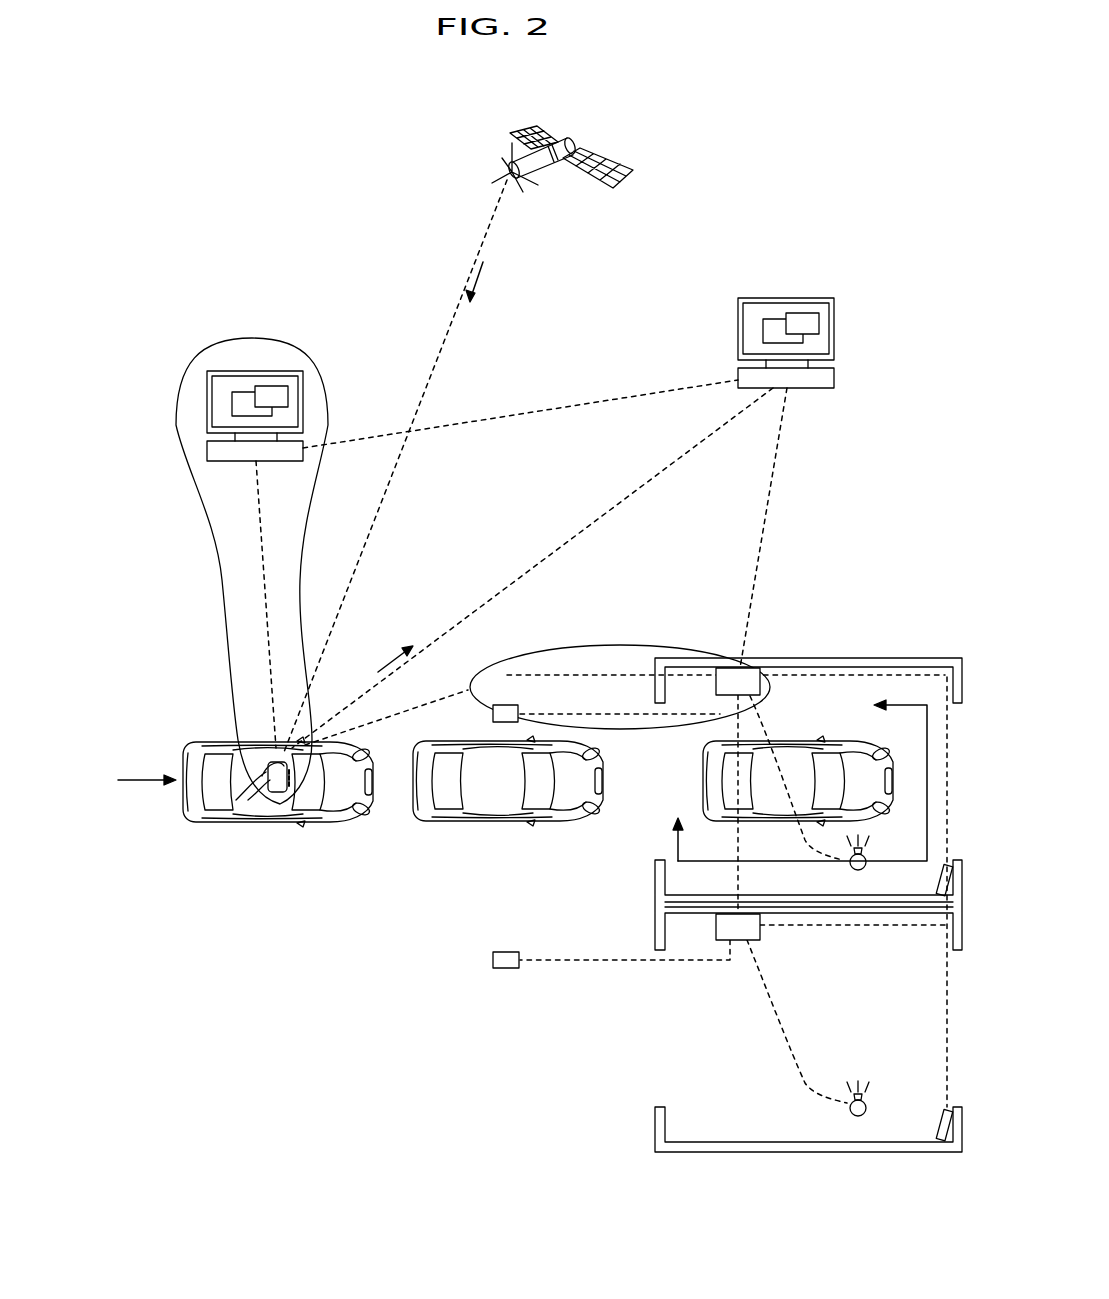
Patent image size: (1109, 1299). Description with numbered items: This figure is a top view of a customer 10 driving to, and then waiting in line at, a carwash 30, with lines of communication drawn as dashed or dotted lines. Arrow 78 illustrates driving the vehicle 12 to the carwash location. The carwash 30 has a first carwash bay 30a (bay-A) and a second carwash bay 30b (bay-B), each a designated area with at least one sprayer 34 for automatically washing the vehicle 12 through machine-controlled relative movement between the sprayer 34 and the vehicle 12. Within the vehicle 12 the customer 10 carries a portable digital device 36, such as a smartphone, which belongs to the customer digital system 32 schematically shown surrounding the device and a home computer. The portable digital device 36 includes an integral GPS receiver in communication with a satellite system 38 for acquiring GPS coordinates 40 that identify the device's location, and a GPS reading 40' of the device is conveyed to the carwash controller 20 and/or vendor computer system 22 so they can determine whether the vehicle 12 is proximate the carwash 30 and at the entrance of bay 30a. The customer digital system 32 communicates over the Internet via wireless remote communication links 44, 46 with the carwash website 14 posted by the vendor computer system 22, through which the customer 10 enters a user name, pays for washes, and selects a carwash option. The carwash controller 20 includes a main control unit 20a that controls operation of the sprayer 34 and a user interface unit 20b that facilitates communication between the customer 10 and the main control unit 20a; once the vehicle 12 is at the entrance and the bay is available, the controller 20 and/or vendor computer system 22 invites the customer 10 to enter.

The customer 10 is at (262, 782).
The vehicle 12 is at (332, 823).
The carwash franchise website 14 is at (242, 395).
The carwash controller 20 is at (602, 648).
The main control unit 20a is at (716, 686).
The user interface unit 20b is at (500, 702).
The vendor computer system 22 is at (812, 389).
The carwash 30 is at (860, 657).
The first carwash bay 30a is at (820, 705).
The second carwash bay 30b is at (722, 1104).
The customer digital system 32 is at (222, 581).
The sprayer 34 is at (859, 870).
The portable digital device 36 is at (281, 793).
The satellite system 38 is at (574, 170).
The GPS coordinates 40 is at (418, 466).
The GPS reading 40' is at (406, 631).
The wireless remote communication link 44 is at (552, 408).
The wireless remote communication link 46 is at (586, 527).
The arrow 78 is at (138, 777).